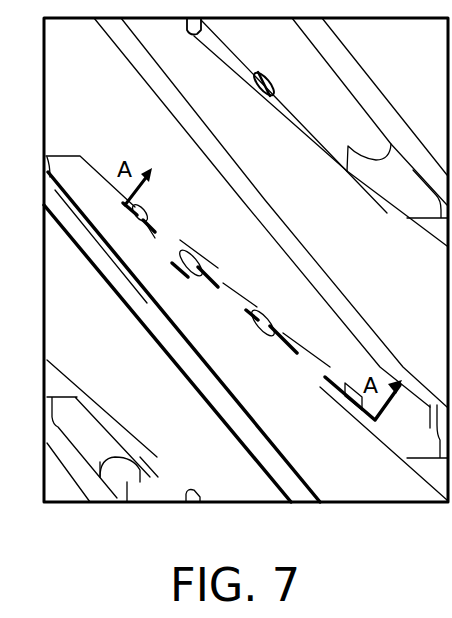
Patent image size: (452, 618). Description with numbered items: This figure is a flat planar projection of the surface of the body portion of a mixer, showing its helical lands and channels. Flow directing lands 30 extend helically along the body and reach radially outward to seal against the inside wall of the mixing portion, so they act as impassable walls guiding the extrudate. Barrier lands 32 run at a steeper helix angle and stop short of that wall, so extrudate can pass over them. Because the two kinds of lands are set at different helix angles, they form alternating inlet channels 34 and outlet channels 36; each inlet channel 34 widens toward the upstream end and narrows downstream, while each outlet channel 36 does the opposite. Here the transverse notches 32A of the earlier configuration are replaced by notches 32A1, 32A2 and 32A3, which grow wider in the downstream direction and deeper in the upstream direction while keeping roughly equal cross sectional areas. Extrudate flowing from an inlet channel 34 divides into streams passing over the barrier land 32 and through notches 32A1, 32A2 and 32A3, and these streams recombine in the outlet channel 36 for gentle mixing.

The flow directing land 30 is at (356, 82).
The barrier land 32 is at (262, 93).
The transverse notch 32A is at (427, 566).
The notch 32A1 is at (163, 240).
The notch 32A2 is at (224, 57).
The notch 32A3 is at (305, 125).
The inlet channel 34 is at (301, 57).
The outlet channel 36 is at (440, 107).